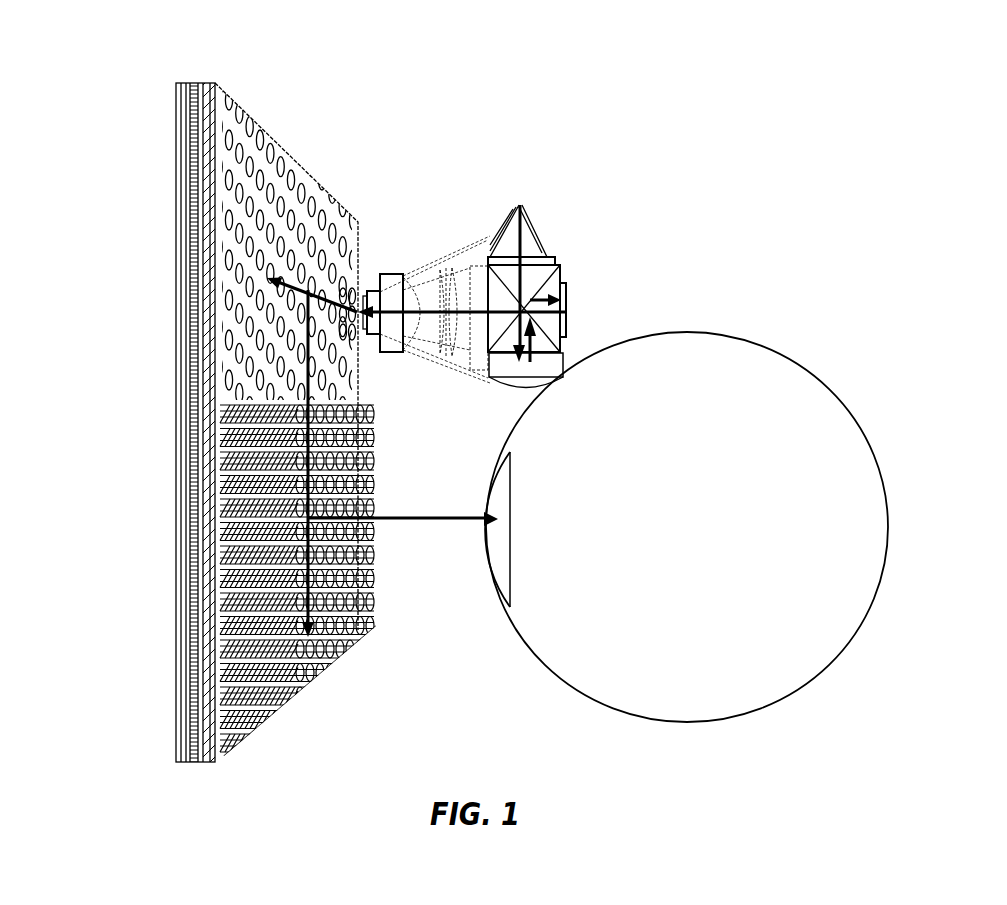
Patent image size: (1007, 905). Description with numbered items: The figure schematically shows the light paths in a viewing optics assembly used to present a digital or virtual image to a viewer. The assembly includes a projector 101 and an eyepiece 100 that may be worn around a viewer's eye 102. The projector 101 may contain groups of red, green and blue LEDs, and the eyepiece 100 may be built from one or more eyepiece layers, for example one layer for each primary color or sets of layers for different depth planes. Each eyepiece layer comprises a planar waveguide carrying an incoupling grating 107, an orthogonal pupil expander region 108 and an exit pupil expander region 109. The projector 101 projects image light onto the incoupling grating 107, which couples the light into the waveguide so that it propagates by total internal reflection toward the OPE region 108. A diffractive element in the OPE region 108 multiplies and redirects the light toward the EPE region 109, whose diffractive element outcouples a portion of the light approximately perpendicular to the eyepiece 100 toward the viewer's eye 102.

The eyepiece 100 is at (222, 73).
The projector 101 is at (603, 110).
The viewer's eye 102 is at (686, 527).
The incoupling grating 107 is at (362, 333).
The orthogonal pupil expander (OPE) region 108 is at (243, 249).
The exit pupil expander (EPE) region 109 is at (210, 558).